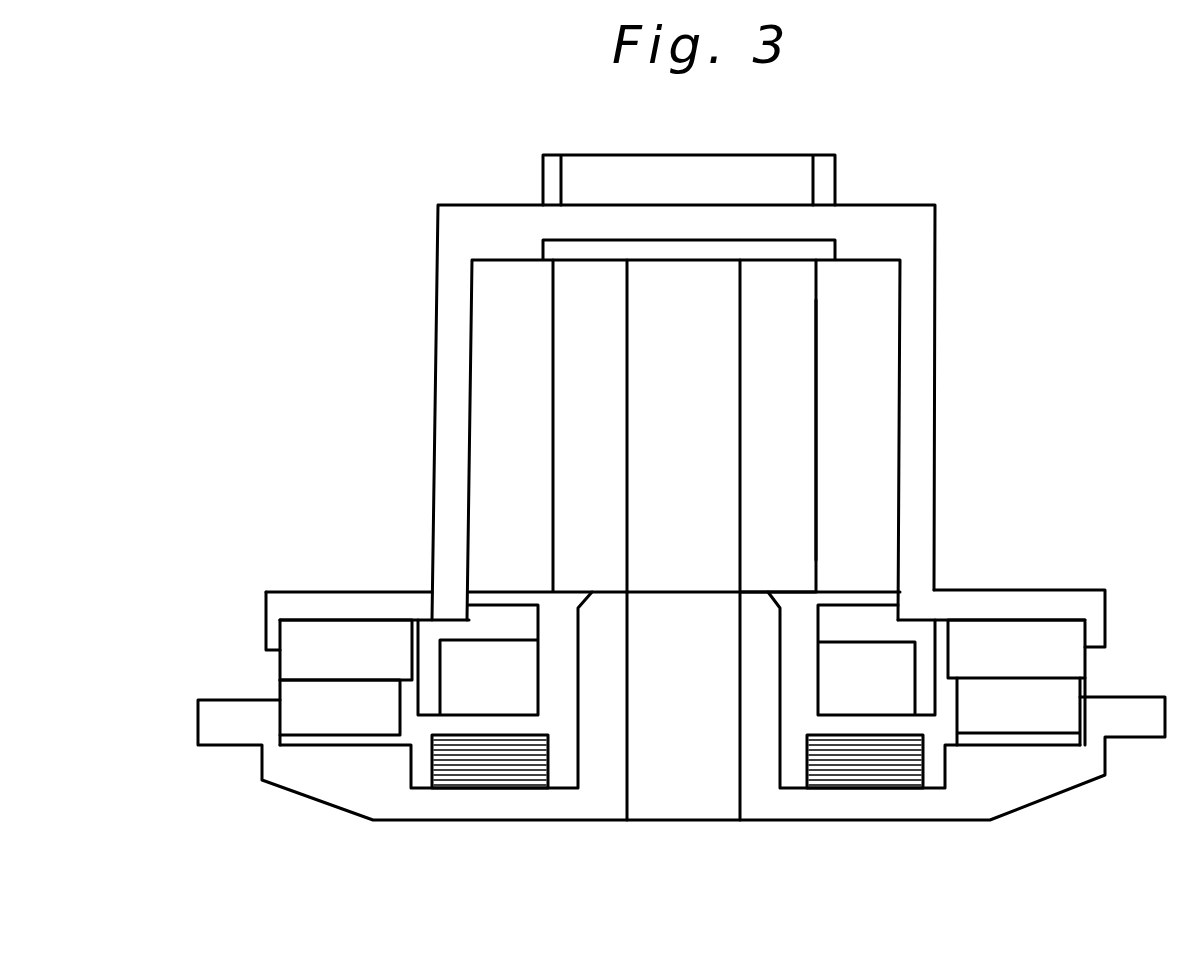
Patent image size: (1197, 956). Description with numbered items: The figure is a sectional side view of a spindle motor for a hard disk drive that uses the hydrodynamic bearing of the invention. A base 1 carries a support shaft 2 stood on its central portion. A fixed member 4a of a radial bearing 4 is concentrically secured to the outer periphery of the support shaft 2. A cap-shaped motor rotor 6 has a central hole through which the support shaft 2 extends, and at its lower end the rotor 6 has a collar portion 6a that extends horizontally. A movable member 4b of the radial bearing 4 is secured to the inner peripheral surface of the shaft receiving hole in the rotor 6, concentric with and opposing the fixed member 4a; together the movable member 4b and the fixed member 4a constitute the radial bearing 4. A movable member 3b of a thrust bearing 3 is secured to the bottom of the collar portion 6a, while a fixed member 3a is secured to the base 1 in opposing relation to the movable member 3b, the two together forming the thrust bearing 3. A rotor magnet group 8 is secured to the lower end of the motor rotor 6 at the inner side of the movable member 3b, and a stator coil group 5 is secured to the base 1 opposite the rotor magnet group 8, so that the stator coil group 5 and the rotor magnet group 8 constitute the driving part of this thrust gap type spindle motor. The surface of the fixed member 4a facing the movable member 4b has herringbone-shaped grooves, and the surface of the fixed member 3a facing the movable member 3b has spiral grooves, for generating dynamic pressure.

The base 1 is at (370, 788).
The support shaft 2 is at (690, 793).
The thrust bearing 3 is at (297, 682).
The fixed member 3a is at (328, 723).
The movable member 3b is at (323, 638).
The radial bearing 4 is at (822, 284).
The fixed member 4a is at (813, 392).
The movable member 4b is at (888, 322).
The stator coil group 5 is at (502, 790).
The motor rotor 6 is at (869, 213).
The collar portion 6a is at (275, 608).
The rotor magnet group 8 is at (452, 655).